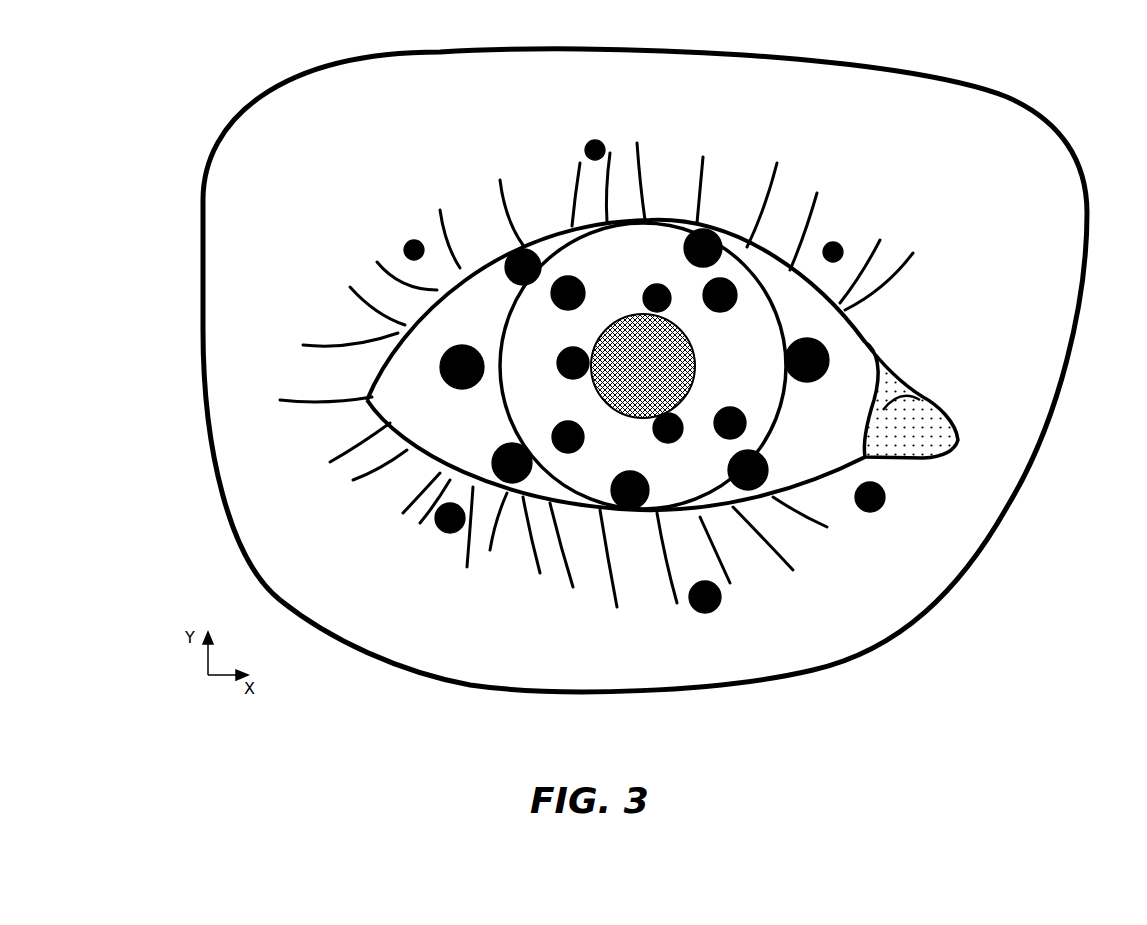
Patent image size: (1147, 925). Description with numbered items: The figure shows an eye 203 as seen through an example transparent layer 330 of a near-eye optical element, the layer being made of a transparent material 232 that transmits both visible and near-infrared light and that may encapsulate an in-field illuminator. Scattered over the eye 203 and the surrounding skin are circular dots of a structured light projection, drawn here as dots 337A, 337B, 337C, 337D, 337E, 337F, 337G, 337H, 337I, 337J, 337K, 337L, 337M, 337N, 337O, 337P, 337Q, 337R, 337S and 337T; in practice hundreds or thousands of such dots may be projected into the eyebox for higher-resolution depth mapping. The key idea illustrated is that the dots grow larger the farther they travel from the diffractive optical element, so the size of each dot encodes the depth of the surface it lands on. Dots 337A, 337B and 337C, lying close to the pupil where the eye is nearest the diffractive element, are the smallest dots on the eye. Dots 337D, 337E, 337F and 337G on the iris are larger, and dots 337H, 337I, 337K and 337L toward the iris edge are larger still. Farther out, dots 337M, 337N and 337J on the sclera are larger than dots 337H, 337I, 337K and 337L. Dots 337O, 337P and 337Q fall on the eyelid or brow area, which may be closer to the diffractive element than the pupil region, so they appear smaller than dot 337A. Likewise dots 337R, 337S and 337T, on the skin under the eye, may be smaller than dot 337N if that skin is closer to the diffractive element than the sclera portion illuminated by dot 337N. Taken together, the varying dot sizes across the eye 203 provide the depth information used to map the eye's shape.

The transparent layer 330 is at (662, 368).
The transparent material 232 is at (1007, 177).
The eye 203 is at (896, 371).
The dot 337A is at (639, 285).
The dot 337B is at (687, 445).
The dot 337C is at (552, 379).
The dot 337D is at (549, 309).
The dot 337E is at (734, 317).
The dot 337F is at (748, 407).
The dot 337G is at (601, 437).
The dot 337H is at (493, 285).
The dot 337I is at (672, 248).
The dot 337J is at (822, 378).
The dot 337K is at (783, 463).
The dot 337L is at (607, 485).
The dot 337M is at (480, 452).
The dot 337N is at (433, 378).
The dot 337O is at (360, 232).
The dot 337P is at (544, 133).
The dot 337Q is at (869, 231).
The dot 337R is at (909, 492).
The dot 337S is at (742, 597).
The dot 337T is at (414, 536).